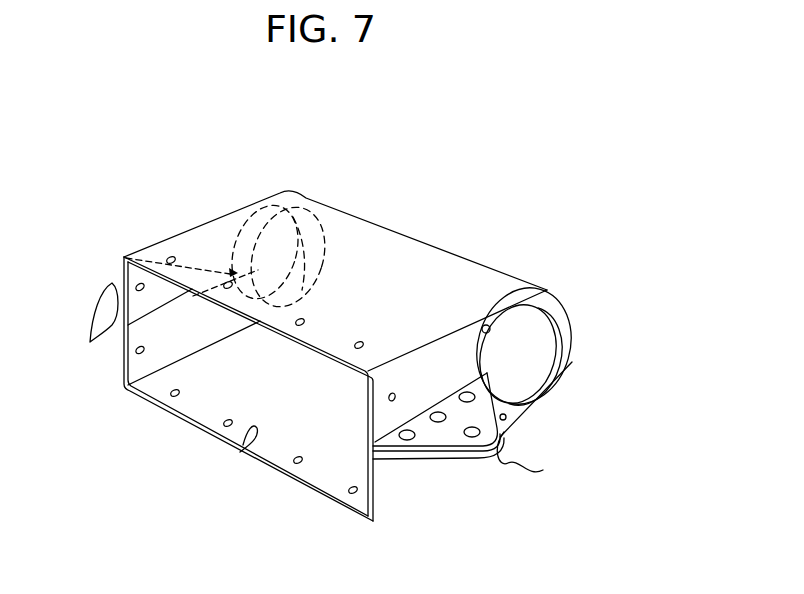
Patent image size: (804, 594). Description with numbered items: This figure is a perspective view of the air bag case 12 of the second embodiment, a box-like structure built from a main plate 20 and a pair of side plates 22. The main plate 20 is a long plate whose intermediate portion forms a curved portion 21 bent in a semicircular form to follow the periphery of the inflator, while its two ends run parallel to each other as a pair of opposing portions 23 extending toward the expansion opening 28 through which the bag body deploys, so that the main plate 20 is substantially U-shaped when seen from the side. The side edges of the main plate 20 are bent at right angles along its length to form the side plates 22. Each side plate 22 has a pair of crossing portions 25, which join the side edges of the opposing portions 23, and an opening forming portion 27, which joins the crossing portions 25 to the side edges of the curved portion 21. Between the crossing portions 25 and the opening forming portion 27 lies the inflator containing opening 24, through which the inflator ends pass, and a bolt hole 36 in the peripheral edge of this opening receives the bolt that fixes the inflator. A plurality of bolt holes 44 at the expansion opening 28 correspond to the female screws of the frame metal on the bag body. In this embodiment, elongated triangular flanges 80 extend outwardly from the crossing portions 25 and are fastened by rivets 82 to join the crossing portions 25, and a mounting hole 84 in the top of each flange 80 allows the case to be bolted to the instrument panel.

The air bag case 12 is at (314, 188).
The main plate 20 is at (363, 205).
The curved portion 21 is at (443, 251).
The side plate 22 is at (116, 367).
The opposing portion 23 is at (363, 252).
The inflator containing opening 24 is at (530, 347).
The crossing portion 25 is at (445, 341).
The opening forming portion 27 is at (565, 322).
The expansion opening 28 is at (243, 445).
The bolt hole 36 is at (488, 327).
The bolt hole 44 is at (300, 322).
The elongated triangular flange 80 is at (316, 391).
The rivet 82 is at (437, 420).
The mounting hole 84 is at (473, 427).